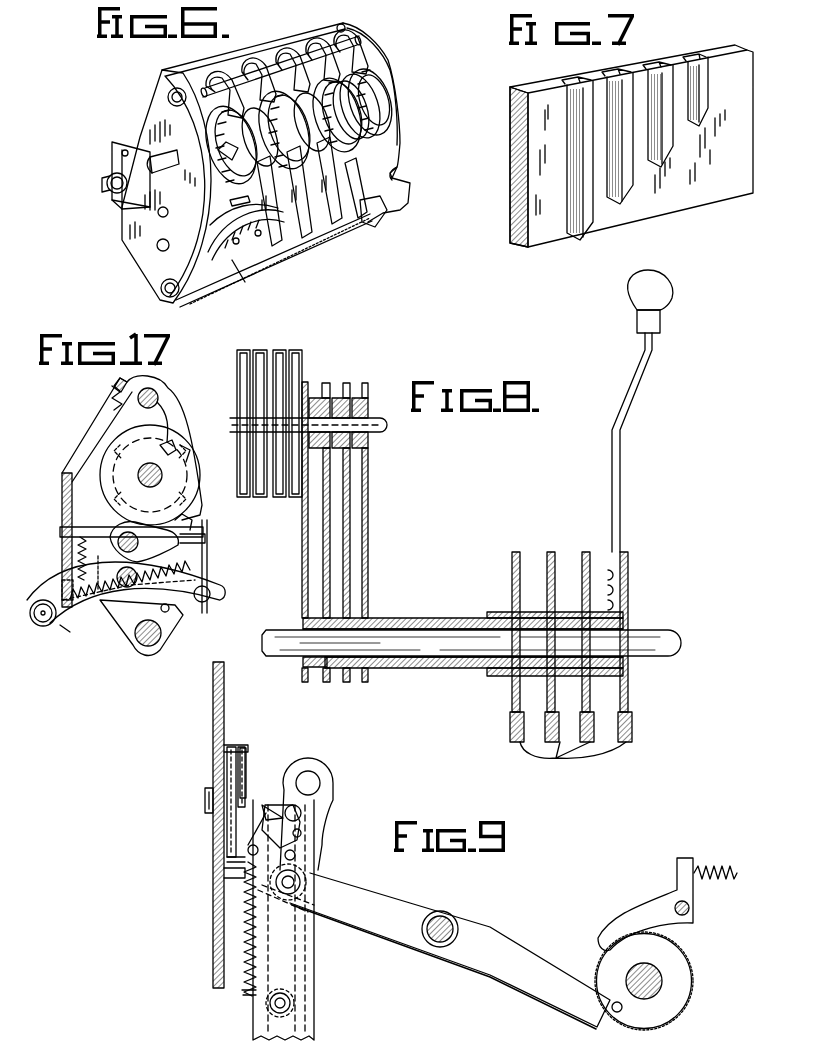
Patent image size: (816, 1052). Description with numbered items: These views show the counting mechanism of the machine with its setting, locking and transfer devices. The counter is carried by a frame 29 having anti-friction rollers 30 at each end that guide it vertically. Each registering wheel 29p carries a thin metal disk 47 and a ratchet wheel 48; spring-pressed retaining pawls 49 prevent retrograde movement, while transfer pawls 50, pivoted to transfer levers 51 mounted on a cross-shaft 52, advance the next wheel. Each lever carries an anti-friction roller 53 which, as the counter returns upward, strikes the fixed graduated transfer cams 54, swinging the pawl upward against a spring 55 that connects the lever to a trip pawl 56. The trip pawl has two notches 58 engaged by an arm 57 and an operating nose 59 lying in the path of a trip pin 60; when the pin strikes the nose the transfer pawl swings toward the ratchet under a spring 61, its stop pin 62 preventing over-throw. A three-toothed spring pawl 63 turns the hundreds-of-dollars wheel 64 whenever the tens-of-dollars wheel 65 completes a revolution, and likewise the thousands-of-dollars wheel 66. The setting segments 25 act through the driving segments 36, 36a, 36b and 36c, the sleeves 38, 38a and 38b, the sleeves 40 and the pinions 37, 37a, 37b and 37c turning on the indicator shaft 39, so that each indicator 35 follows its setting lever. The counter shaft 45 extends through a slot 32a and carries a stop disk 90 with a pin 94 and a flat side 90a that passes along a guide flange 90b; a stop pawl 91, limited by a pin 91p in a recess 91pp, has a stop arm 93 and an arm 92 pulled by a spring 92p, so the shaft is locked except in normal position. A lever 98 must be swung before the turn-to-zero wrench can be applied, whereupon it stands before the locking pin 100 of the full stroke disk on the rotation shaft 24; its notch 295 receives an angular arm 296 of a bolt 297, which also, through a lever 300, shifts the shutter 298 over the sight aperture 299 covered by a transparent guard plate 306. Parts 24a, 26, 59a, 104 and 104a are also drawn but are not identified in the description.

In FIG. 9, the rotation shaft 24 is at (644, 973).
In FIG. 8, the shaft 24a is at (660, 658).
In FIG. 9, the shaft 24a is at (455, 920).
In FIG. 8, the segment 25 is at (512, 572).
In FIG. 8, the hand lever 26 is at (630, 592).
In FIG. 6, the counter frame 29 is at (180, 160).
In FIG. 17, the counter frame 29 is at (62, 493).
In FIG. 6, the registering wheels 29p is at (275, 66).
In FIG. 6, the anti-friction rollers 30 is at (168, 97).
In FIG. 9, the slot 32a is at (282, 952).
In FIG. 8, the indicators 35 is at (292, 350).
In FIG. 8, the units-of-cents driving segment 36 is at (302, 527).
In FIG. 8, the tens-of-cents driving segment 36a is at (323, 559).
In FIG. 8, the units-of-dollars indicator segment 36b is at (350, 504).
In FIG. 8, the tens-of-dollars driving segment 36c is at (368, 535).
In FIG. 8, the indicator pinion 37 is at (306, 382).
In FIG. 8, the pinion 37a is at (327, 383).
In FIG. 8, the pinion 37b is at (347, 383).
In FIG. 8, the pinion 37c is at (369, 388).
In FIG. 8, the sleeve 38 is at (466, 668).
In FIG. 8, the sleeve 38a is at (440, 620).
In FIG. 8, the sleeve 38b is at (426, 668).
In FIG. 8, the indicator shaft 39 is at (388, 428).
In FIG. 17, the sleeves 40 is at (172, 421).
In FIG. 6, the counter shaft 45 is at (106, 185).
In FIG. 17, the counter shaft 45 is at (140, 474).
In FIG. 9, the counter shaft 45 is at (300, 878).
In FIG. 6, the thin metal disk 47 is at (218, 148).
In FIG. 17, the ratchet wheel 48 is at (170, 446).
In FIG. 6, the retaining pawls 49 is at (345, 42).
In FIG. 17, the retaining pawls 49 is at (128, 424).
In FIG. 6, the transfer pawls 50 is at (230, 210).
In FIG. 6, the transfer levers 51 is at (352, 216).
In FIG. 17, the transfer levers 51 is at (66, 622).
In FIG. 6, the cross-shaft 52 is at (158, 248).
In FIG. 17, the cross-shaft 52 is at (117, 574).
In FIG. 17, the anti-friction roller 53 is at (42, 626).
In FIG. 7, the transfer cams 54 is at (576, 238).
In FIG. 17, the springs 55 is at (76, 555).
In FIG. 17, the trip pawls 56 is at (138, 541).
In FIG. 6, the arm 57 is at (240, 230).
In FIG. 6, the notches 58 is at (230, 201).
In FIG. 17, the notches 58 is at (186, 524).
In FIG. 17, the operating nose 59 is at (110, 546).
In FIG. 17, the stop 59a is at (205, 538).
In FIG. 17, the trip pin 60 is at (118, 527).
In FIG. 6, the spring 61 is at (382, 212).
In FIG. 6, the stop pin 62 is at (236, 250).
In FIG. 17, the stop pin 62 is at (170, 612).
In FIG. 8, the stop pin 62 is at (573, 753).
In FIG. 6, the spring pawl 63 is at (393, 160).
In FIG. 17, the spring pawl 63 is at (207, 560).
In FIG. 6, the hundreds-of-dollars registering wheel 64 is at (380, 100).
In FIG. 17, the hundreds-of-dollars registering wheel 64 is at (205, 580).
In FIG. 6, the tens-of-dollars wheel 65 is at (376, 82).
In FIG. 17, the tens-of-dollars wheel 65 is at (114, 462).
In FIG. 6, the thousands-of-dollars registering wheel 66 is at (372, 110).
In FIG. 6, the stop disk 90 is at (126, 150).
In FIG. 6, the flat side 90a is at (140, 205).
In FIG. 9, the guide flange 90b is at (310, 984).
In FIG. 6, the stop pawl 91 is at (124, 155).
In FIG. 9, the stop pawl 91 is at (318, 812).
In FIG. 9, the pin 91p is at (302, 833).
In FIG. 9, the recess 91pp is at (270, 805).
In FIG. 9, the arm 92 is at (244, 860).
In FIG. 9, the spring 92p is at (244, 945).
In FIG. 9, the stop arm 93 is at (296, 855).
In FIG. 9, the pin 94 is at (300, 844).
In FIG. 9, the locking lever 98 is at (450, 951).
In FIG. 9, the locking pin 100 is at (617, 1012).
In FIG. 9, the pawl 104 is at (684, 962).
In FIG. 9, the pawl arm 104a is at (644, 905).
In FIG. 9, the notch 295 is at (240, 880).
In FIG. 9, the angular arm 296 is at (240, 870).
In FIG. 9, the bolt 297 is at (236, 745).
In FIG. 9, the shutter 298 is at (245, 745).
In FIG. 9, the sight aperture 299 is at (232, 855).
In FIG. 9, the lever 300 is at (246, 752).
In FIG. 9, the transparent guard plate 306 is at (213, 842).